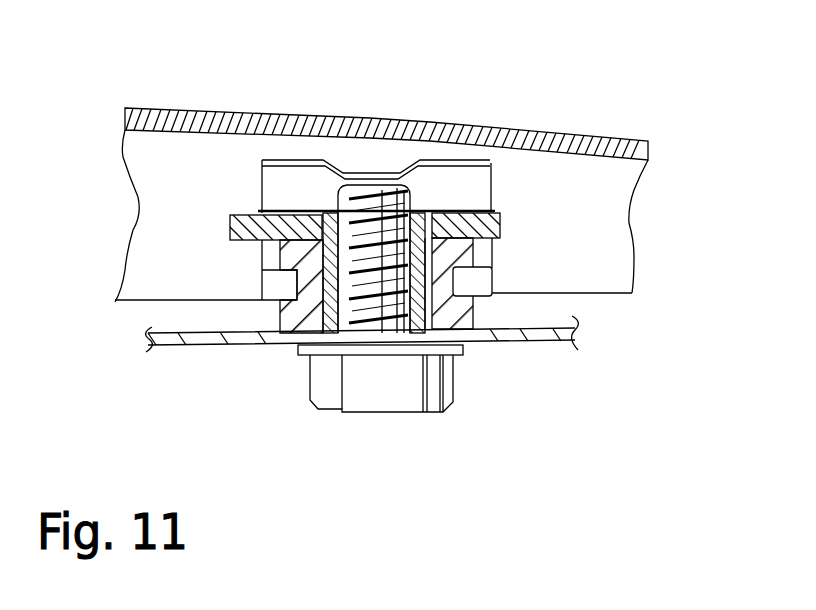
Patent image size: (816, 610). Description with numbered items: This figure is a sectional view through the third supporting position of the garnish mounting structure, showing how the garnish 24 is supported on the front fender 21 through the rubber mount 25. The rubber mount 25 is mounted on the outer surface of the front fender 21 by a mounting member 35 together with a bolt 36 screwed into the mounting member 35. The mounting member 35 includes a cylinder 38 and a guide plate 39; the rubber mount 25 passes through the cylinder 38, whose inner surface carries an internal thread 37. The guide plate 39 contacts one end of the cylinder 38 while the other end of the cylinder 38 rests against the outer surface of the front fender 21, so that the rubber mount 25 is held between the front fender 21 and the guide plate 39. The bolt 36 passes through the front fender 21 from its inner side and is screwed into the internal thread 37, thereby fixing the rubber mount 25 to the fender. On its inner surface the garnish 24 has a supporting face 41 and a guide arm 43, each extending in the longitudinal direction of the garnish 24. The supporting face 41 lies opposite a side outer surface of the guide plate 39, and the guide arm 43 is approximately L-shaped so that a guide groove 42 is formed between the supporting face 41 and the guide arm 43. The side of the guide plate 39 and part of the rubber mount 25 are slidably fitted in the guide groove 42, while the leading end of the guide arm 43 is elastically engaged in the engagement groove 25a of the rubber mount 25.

The front fender 21 is at (190, 347).
The garnish 24 is at (532, 135).
The rubber mount 25 is at (297, 250).
The engagement groove 25a is at (297, 274).
The mounting member 35 is at (311, 202).
The bolt 36 is at (395, 395).
The internal thread 37 is at (362, 346).
The cylinder 38 is at (298, 358).
The guide plate 39 is at (500, 218).
The supporting face 41 is at (458, 212).
The guide groove 42 is at (490, 260).
The guide arm 43 is at (480, 292).